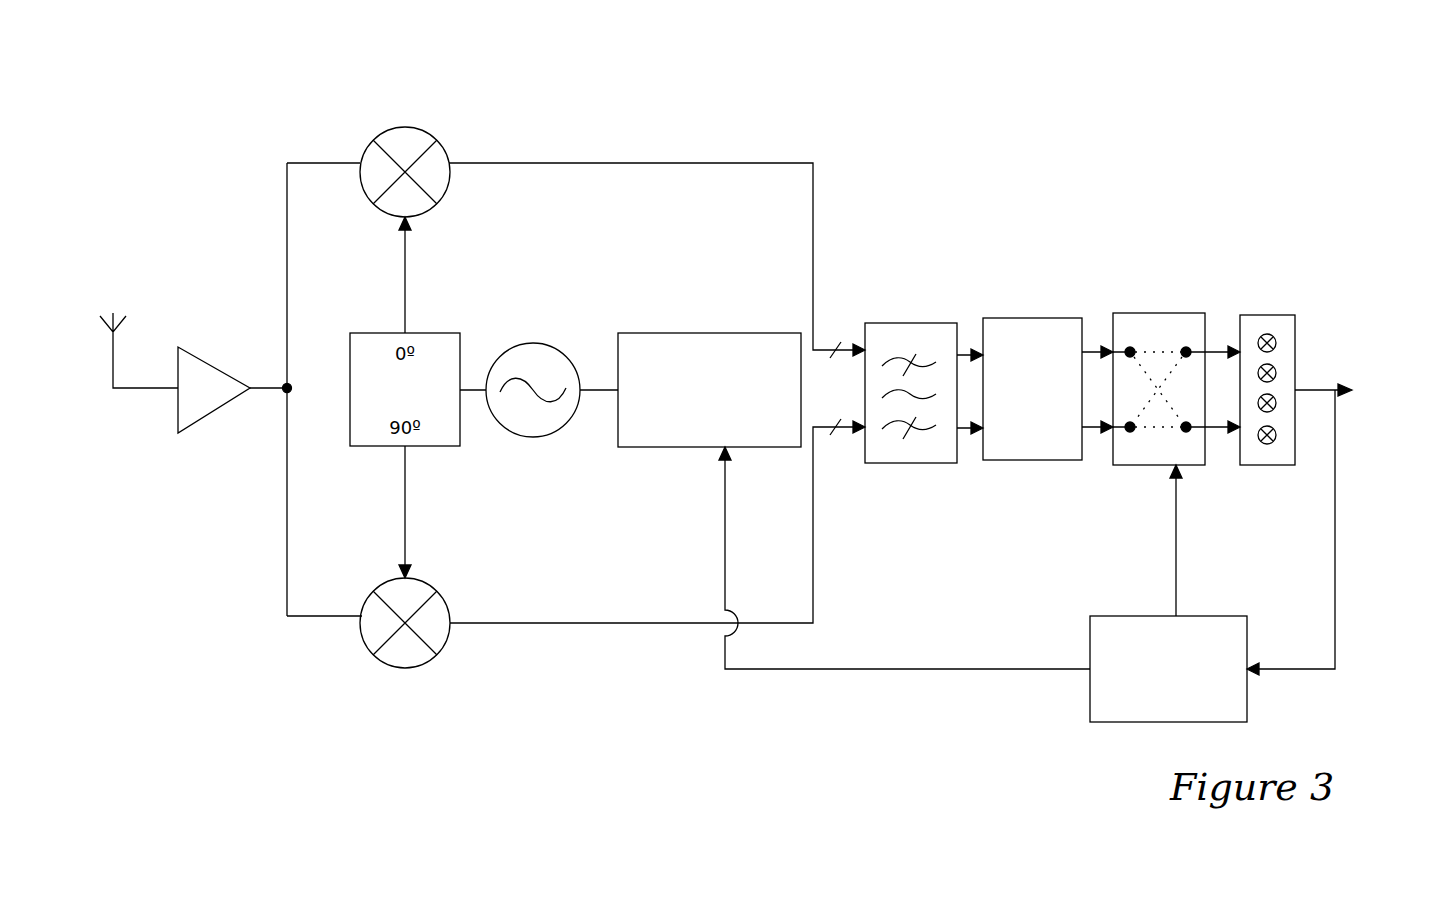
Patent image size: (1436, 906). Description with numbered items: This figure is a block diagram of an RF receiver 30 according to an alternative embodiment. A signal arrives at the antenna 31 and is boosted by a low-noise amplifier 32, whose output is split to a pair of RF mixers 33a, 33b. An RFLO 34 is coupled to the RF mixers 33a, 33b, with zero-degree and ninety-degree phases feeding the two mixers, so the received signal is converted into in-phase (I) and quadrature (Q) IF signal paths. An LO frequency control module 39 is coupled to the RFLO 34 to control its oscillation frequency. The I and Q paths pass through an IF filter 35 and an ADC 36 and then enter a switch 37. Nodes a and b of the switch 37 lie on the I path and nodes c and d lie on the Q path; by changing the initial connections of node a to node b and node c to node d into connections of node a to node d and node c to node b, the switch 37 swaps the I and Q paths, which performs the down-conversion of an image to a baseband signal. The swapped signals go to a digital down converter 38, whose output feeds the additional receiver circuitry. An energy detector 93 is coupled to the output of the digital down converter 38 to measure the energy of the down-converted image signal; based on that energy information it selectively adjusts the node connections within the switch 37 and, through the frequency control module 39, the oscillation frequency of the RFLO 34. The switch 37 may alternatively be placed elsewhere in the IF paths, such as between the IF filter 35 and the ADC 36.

The RF receiver 30 is at (768, 84).
The antenna 31 is at (113, 348).
The low-noise amplifier 32 is at (226, 404).
The RF mixer 33a is at (438, 143).
The RF mixer 33b is at (417, 666).
The RFLO 34 is at (535, 437).
The IF filter 35 is at (908, 323).
The ADC 36 is at (1033, 318).
The switch 37 is at (1158, 313).
The digital down converter 38 is at (1267, 315).
The LO frequency control module 39 is at (769, 362).
The energy detector 93 is at (1219, 644).